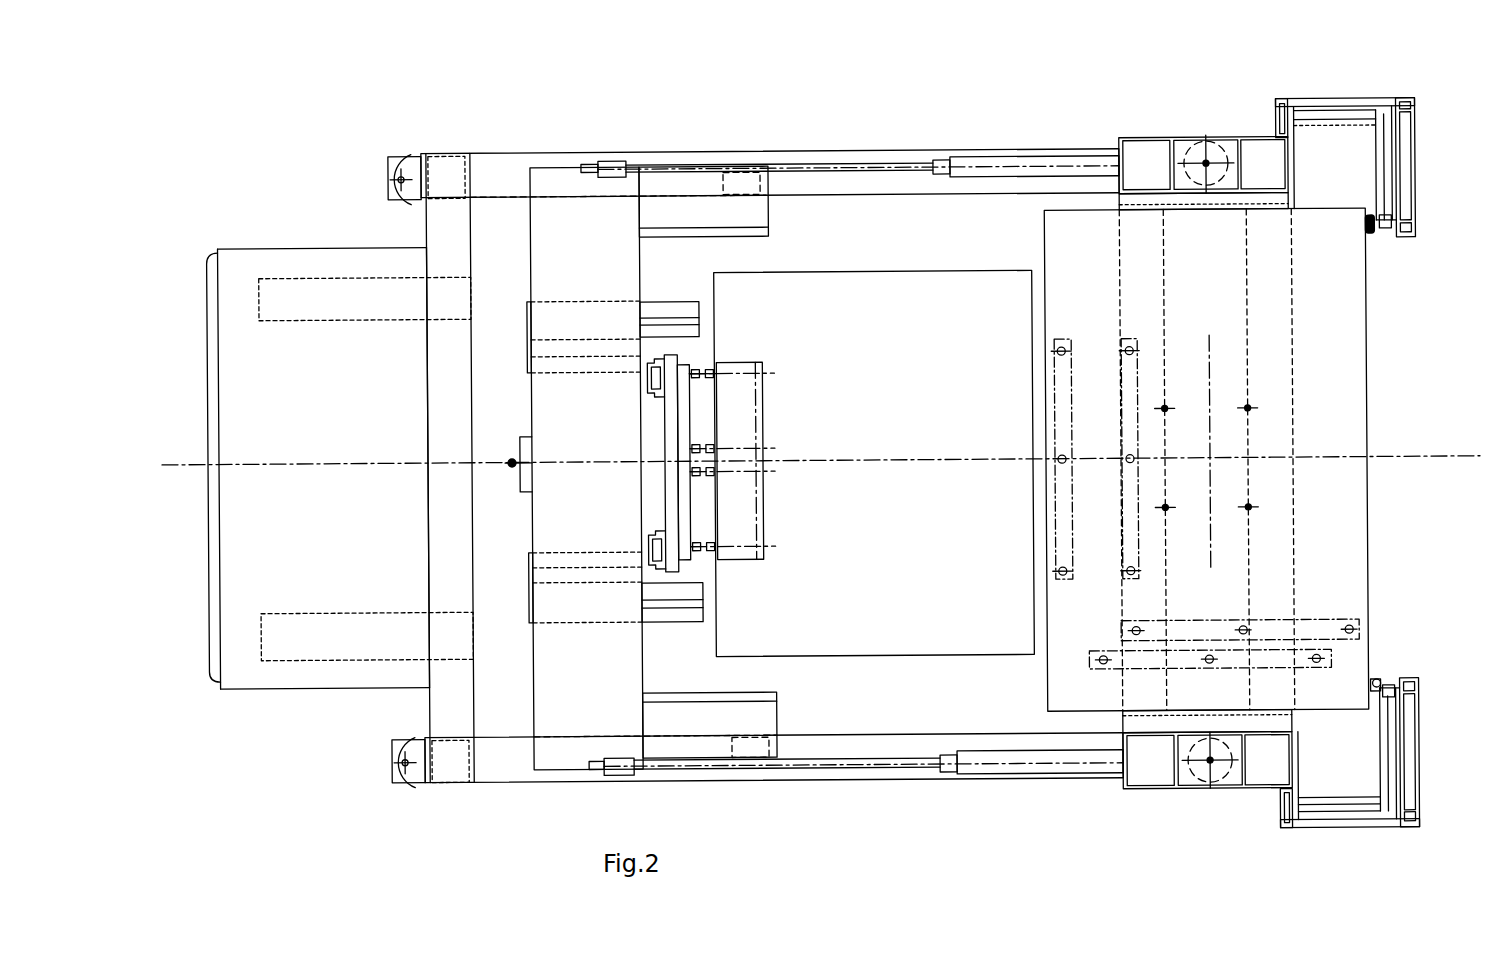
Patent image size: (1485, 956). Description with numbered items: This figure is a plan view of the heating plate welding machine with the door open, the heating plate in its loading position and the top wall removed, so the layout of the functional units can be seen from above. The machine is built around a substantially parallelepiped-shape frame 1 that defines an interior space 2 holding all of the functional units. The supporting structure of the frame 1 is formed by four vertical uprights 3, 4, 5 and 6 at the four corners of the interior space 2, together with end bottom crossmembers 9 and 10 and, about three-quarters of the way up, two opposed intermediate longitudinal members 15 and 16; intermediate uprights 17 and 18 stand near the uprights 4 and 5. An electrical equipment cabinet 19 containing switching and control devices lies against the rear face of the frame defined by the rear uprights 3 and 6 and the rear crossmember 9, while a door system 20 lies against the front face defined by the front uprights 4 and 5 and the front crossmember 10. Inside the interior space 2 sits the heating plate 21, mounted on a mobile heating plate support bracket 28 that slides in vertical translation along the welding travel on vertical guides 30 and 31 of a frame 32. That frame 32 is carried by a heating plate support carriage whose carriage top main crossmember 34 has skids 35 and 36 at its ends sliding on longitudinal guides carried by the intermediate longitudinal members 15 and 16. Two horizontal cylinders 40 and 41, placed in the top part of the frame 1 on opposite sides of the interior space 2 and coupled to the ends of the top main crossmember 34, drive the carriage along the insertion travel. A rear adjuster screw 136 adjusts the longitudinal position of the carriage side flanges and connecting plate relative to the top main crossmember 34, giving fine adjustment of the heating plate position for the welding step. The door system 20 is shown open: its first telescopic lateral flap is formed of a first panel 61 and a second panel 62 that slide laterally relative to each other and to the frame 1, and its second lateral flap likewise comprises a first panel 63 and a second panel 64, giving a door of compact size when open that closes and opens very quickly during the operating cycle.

The frame 1 is at (811, 790).
The interior space 2 is at (957, 690).
The vertical upright 3 is at (447, 762).
The vertical upright 4 is at (1265, 760).
The vertical upright 5 is at (1260, 160).
The vertical upright 6 is at (447, 172).
The end bottom crossmember 9 is at (450, 700).
The end bottom crossmember 10 is at (1330, 503).
The intermediate longitudinal member 15 is at (507, 755).
The intermediate longitudinal member 16 is at (508, 178).
The intermediate upright 17 is at (1142, 790).
The intermediate upright 18 is at (1157, 160).
The electrical equipment cabinet 19 is at (245, 545).
The door system 20 is at (1328, 98).
The heating plate 21 is at (870, 312).
The heating plate support bracket 28 is at (683, 553).
The vertical guide 30 is at (648, 549).
The vertical guide 31 is at (647, 380).
The frame 32 is at (645, 475).
The carriage top main crossmember 34 is at (560, 235).
The skid 35 is at (752, 748).
The skid 36 is at (748, 178).
The horizontal cylinder 40 is at (1040, 763).
The horizontal cylinder 41 is at (1010, 160).
The first panel 61 is at (1386, 230).
The second panel 62 is at (1372, 237).
The first panel 63 is at (1388, 692).
The second panel 64 is at (1377, 684).
The rear adjuster screw 136 is at (508, 461).